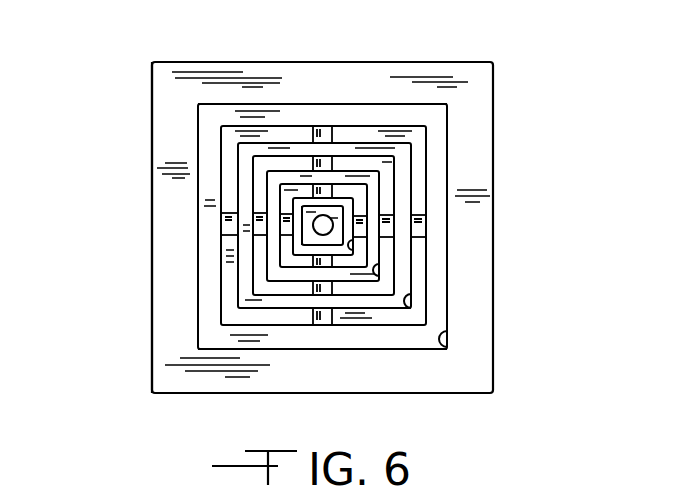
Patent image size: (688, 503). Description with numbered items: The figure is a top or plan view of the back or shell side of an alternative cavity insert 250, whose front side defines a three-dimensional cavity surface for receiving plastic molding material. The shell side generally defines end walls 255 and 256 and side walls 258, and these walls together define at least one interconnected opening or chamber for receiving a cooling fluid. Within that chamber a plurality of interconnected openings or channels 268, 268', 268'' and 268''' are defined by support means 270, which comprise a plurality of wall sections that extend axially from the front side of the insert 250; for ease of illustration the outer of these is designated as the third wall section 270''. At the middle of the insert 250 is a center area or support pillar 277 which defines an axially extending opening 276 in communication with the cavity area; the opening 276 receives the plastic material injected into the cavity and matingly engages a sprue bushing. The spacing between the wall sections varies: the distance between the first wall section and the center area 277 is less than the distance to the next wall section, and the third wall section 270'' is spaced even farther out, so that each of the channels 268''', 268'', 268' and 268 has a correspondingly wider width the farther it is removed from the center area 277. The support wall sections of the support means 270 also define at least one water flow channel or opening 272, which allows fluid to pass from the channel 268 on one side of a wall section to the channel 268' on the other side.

The cavity insert 250 is at (131, 190).
The end wall 255 is at (310, 395).
The end wall 256 is at (352, 78).
The side walls 258 is at (493, 221).
The channel 268 is at (474, 265).
The channel 268' is at (495, 296).
The channel 268'' is at (513, 331).
The channel 268''' is at (532, 368).
The support means 270 is at (443, 188).
The third wall section 270'' is at (406, 173).
The water flow channel 272 is at (316, 133).
The axially extending opening 276 is at (305, 219).
The center area 277 is at (350, 240).